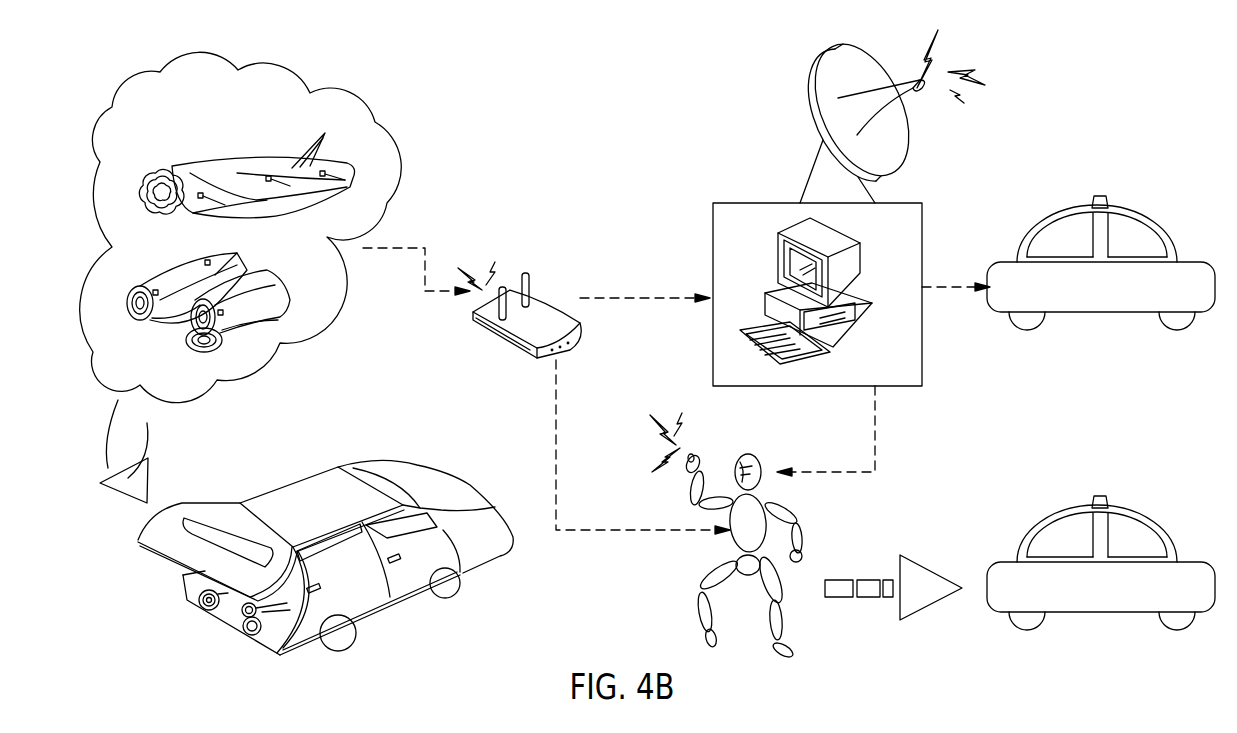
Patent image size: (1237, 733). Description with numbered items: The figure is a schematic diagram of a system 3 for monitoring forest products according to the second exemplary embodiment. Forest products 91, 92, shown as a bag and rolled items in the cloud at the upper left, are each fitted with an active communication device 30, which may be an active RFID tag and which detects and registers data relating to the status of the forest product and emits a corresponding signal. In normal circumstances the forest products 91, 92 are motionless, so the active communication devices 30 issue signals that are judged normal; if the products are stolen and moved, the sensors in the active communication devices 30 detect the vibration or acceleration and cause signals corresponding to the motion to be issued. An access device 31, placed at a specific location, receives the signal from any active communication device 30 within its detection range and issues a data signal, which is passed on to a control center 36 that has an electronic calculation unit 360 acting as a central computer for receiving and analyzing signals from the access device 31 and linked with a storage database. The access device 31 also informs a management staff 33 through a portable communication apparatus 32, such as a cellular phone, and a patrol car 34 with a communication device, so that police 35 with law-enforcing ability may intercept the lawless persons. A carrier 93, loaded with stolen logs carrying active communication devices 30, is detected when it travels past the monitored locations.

The system 3 is at (606, 76).
The active communication device 30 is at (324, 175).
The access device 31 is at (533, 323).
The portable communication apparatus 32 is at (697, 455).
The management staff 33 is at (760, 530).
The patrol car 34 is at (1122, 230).
The police 35 is at (1130, 535).
The control center 36 is at (923, 232).
The electronic calculation unit 360 is at (843, 338).
The forest product 91 is at (255, 172).
The forest product 92 is at (280, 289).
The carrier 93 is at (493, 540).